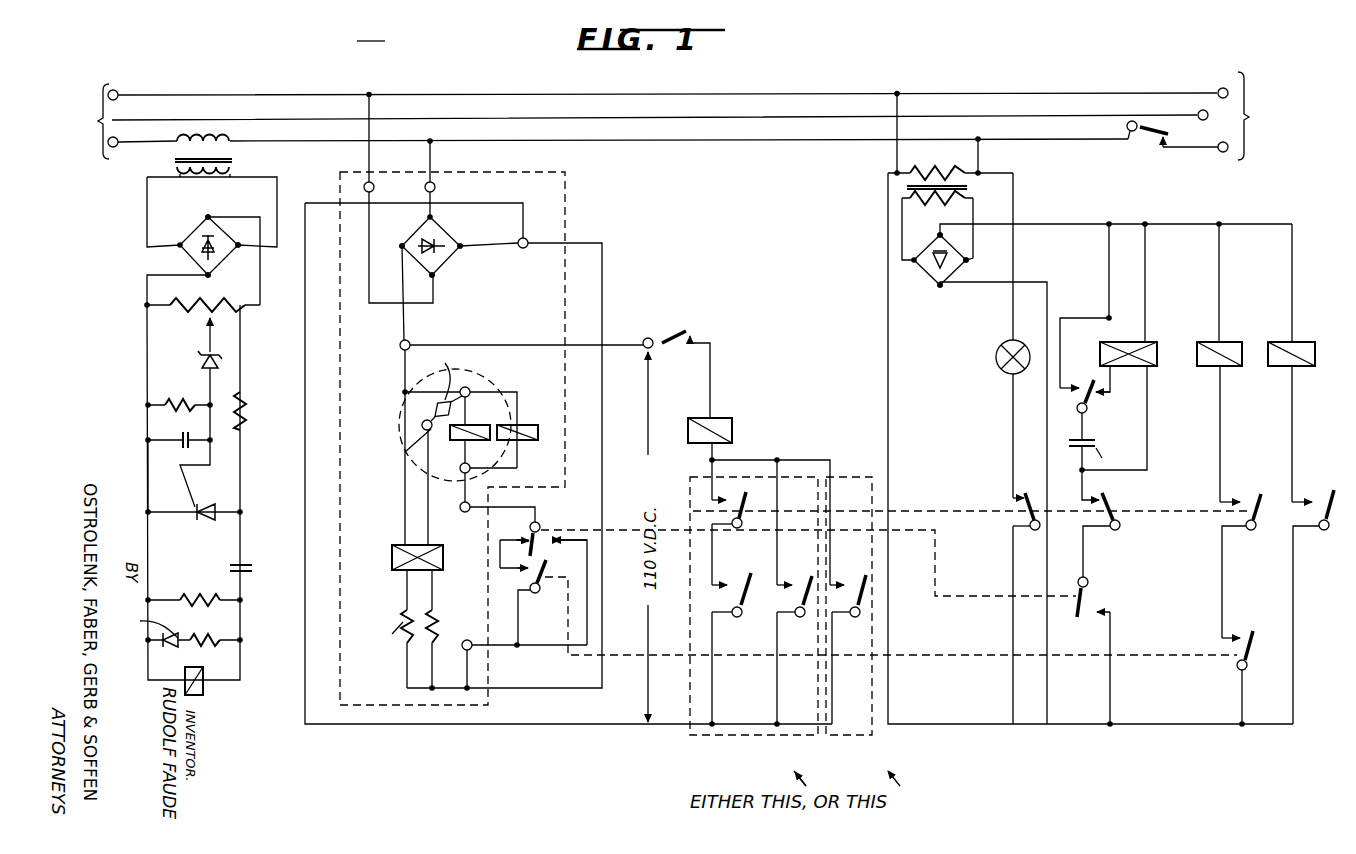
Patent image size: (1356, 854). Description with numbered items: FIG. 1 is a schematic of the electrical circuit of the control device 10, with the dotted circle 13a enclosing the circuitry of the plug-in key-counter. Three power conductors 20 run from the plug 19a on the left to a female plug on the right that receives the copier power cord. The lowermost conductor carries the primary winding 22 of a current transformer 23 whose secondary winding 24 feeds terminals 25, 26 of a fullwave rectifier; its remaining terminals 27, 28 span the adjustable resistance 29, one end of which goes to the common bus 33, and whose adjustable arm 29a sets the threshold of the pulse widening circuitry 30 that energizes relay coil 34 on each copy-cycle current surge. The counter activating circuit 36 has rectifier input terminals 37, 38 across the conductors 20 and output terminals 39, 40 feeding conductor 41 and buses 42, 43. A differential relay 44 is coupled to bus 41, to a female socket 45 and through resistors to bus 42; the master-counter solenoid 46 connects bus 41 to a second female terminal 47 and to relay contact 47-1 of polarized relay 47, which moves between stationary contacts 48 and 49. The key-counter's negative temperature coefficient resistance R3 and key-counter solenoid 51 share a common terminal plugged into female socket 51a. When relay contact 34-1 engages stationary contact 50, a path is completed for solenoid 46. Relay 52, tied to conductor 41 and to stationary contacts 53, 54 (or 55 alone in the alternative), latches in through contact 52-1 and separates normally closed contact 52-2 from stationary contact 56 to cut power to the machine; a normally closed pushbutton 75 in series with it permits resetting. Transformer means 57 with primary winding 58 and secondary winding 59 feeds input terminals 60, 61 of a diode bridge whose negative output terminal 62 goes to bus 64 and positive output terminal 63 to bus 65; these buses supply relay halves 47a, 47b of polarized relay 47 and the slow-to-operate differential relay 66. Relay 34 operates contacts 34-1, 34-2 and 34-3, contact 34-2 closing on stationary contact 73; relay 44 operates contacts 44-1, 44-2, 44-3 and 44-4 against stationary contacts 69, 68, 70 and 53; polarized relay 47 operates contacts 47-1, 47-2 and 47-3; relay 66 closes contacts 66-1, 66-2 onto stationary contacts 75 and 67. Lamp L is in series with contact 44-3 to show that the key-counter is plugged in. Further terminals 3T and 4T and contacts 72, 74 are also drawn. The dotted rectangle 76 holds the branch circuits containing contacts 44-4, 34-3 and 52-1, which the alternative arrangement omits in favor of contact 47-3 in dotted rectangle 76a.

The control device 10 is at (371, 31).
The plug 19a is at (72, 122).
The power conductors 20 is at (151, 142).
The primary winding 22 is at (232, 133).
The current transformer 23 is at (252, 163).
The secondary winding 24 is at (178, 172).
The rectifier terminal 25 is at (181, 245).
The rectifier terminal 26 is at (238, 248).
The rectifier terminal 27 is at (210, 217).
The rectifier terminal 28 is at (207, 275).
The adjustable resistance element 29 is at (158, 305).
The adjustable arm 29a is at (205, 316).
The pulse widening circuitry 30 is at (128, 352).
The common bus 33 is at (148, 468).
The relay coil 34 is at (195, 695).
The counter activating circuit 36 is at (625, 194).
The rectifier input terminal 37 is at (427, 218).
The rectifier input terminal 38 is at (440, 280).
The rectifier output terminal 39 is at (402, 249).
The rectifier output terminal 40 is at (462, 248).
The conductor 41 is at (400, 322).
The bus 42 is at (603, 302).
The bus 43 is at (521, 203).
The dotted circle 13a is at (398, 420).
The negative temperature coefficient resistance R3 is at (433, 402).
The differential relay 44 is at (392, 556).
The female socket 45 is at (402, 452).
The solenoid 46 is at (520, 444).
The polarized relay 47 is at (463, 468).
The terminal 3T is at (486, 509).
The terminal 4T is at (513, 664).
The relay contact 47-1 is at (516, 536).
The stationary contact 48 is at (514, 554).
The stationary contact 49 is at (560, 536).
The stationary contact 50 is at (517, 573).
The key-counter solenoid 51 is at (488, 426).
The female socket 51a is at (469, 390).
The relay contact 34-1 is at (552, 601).
The relay 52 is at (722, 420).
The stationary contact 53 is at (720, 501).
The stationary contact 54 is at (811, 577).
The stationary contact 55 is at (865, 576).
The stationary contact 56 is at (1165, 143).
The transformer means 57 is at (898, 190).
The primary winding 58 is at (897, 172).
The secondary winding 59 is at (915, 204).
The rectifier input terminal 60 is at (913, 265).
The rectifier input terminal 61 is at (969, 264).
The negative output terminal 62 is at (944, 236).
The positive output terminal 63 is at (940, 288).
The bus 64 is at (1045, 224).
The bus 65 is at (1047, 283).
The differential relay 66 is at (1157, 343).
The stationary contact 67 is at (1326, 499).
The stationary contact 68 is at (1255, 500).
The stationary contact 69 is at (1103, 504).
The stationary contact 70 is at (1027, 492).
The contact 72 is at (750, 576).
The stationary contact 73 is at (1250, 632).
The contact blade 74 is at (1096, 388).
The stationary contact 75 is at (674, 334).
The dotted rectangle 76 is at (755, 736).
The dotted rectangle 76a is at (845, 736).
The relay contact 34-2 is at (1255, 661).
The relay contact 34-3 is at (745, 606).
The relay contact 44-1 is at (1120, 519).
The relay contact 44-2 is at (1258, 531).
The relay contact 44-3 is at (1030, 523).
The relay contact 44-4 is at (757, 498).
The relay contact 47-2 is at (1092, 608).
The relay contact 47-3 is at (860, 606).
The relay half 47a is at (1222, 370).
The relay half 47b is at (1300, 368).
The relay contact 52-1 is at (806, 606).
The relay contact 52-2 is at (1133, 132).
The relay contact 66-1 is at (1088, 409).
The relay contact 66-2 is at (1330, 531).